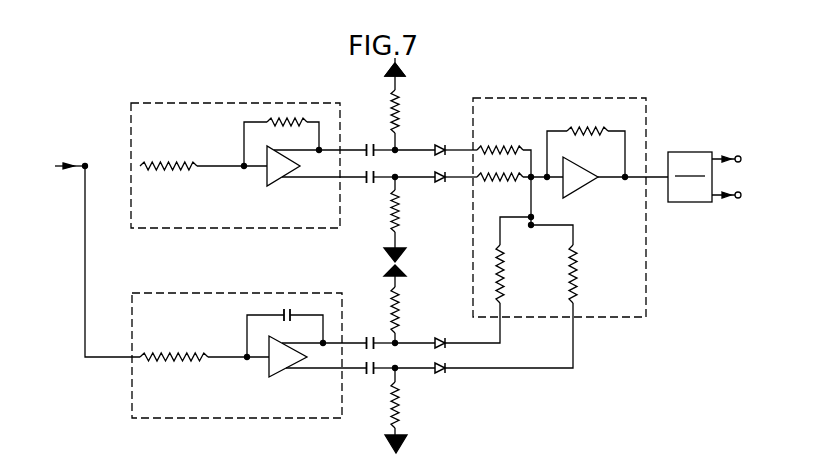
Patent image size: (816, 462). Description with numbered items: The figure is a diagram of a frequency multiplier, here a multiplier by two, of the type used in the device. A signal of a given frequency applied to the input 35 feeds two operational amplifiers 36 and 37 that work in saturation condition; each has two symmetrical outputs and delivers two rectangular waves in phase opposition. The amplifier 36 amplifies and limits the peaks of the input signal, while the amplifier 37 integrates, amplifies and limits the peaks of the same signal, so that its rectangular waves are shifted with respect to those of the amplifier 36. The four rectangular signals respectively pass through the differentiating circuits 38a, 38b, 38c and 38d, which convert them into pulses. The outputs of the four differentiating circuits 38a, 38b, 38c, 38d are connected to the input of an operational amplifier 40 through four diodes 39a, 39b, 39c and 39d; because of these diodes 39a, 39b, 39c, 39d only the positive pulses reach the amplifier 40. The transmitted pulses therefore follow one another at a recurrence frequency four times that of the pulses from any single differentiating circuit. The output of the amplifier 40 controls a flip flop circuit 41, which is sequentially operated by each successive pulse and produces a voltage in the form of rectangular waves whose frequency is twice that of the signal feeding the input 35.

The input 35 is at (84, 163).
The operational amplifier 36 is at (179, 218).
The operational amplifier 37 is at (240, 293).
The differentiating circuit 38a is at (393, 148).
The differentiating circuit 38b is at (393, 180).
The differentiating circuit 38c is at (394, 341).
The differentiating circuit 38d is at (394, 371).
The diode 39a is at (438, 145).
The diode 39b is at (437, 186).
The diode 39c is at (438, 337).
The diode 39d is at (442, 378).
The operational amplifier 40 is at (608, 316).
The flip flop circuit 41 is at (695, 222).